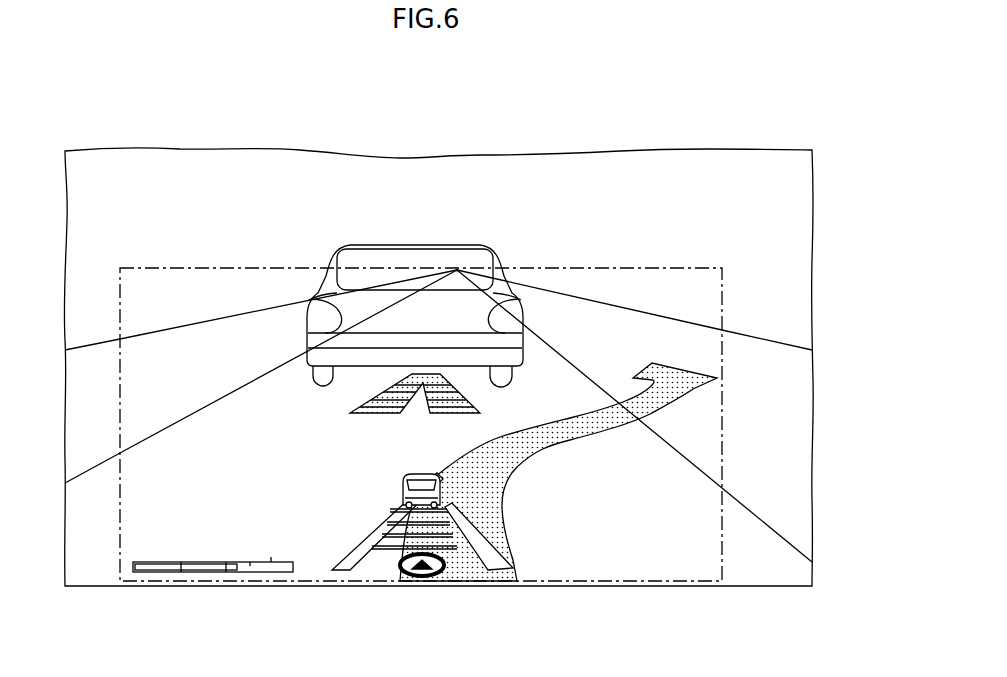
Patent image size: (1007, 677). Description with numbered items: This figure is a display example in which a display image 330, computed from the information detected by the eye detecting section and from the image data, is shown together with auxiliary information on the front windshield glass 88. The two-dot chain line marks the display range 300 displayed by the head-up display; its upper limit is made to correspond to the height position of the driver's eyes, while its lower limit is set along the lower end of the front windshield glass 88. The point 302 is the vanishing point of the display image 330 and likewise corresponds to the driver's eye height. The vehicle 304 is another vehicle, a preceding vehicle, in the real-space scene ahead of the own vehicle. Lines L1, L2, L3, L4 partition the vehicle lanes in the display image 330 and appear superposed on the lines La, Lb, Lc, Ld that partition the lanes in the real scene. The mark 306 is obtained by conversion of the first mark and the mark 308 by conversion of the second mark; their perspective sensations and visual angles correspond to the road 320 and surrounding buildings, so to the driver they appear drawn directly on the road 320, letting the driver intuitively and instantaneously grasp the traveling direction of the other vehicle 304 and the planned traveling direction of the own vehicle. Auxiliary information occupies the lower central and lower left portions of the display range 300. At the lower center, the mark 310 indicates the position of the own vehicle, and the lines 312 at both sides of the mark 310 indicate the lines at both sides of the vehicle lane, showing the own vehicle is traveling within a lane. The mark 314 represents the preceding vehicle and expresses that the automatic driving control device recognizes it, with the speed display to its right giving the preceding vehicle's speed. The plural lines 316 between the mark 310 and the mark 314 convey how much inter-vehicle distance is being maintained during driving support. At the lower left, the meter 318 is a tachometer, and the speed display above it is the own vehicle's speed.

The front windshield glass 88 is at (774, 164).
The display range 300 is at (665, 267).
The vanishing point 302 is at (457, 270).
The vehicle 304 is at (397, 242).
The mark 306 is at (365, 403).
The mark 308 is at (584, 428).
The mark 310 is at (404, 559).
The lines 312 is at (342, 557).
The mark 314 is at (403, 485).
The lines 316 is at (380, 536).
The meter 318 is at (214, 536).
The road 320 is at (655, 537).
The display image 330 is at (704, 506).
The line La is at (90, 344).
The line Lb is at (90, 468).
The line Lc is at (768, 525).
The line Ld is at (768, 339).
The line L1 is at (155, 331).
The line L2 is at (173, 423).
The line L3 is at (690, 461).
The line L4 is at (690, 322).